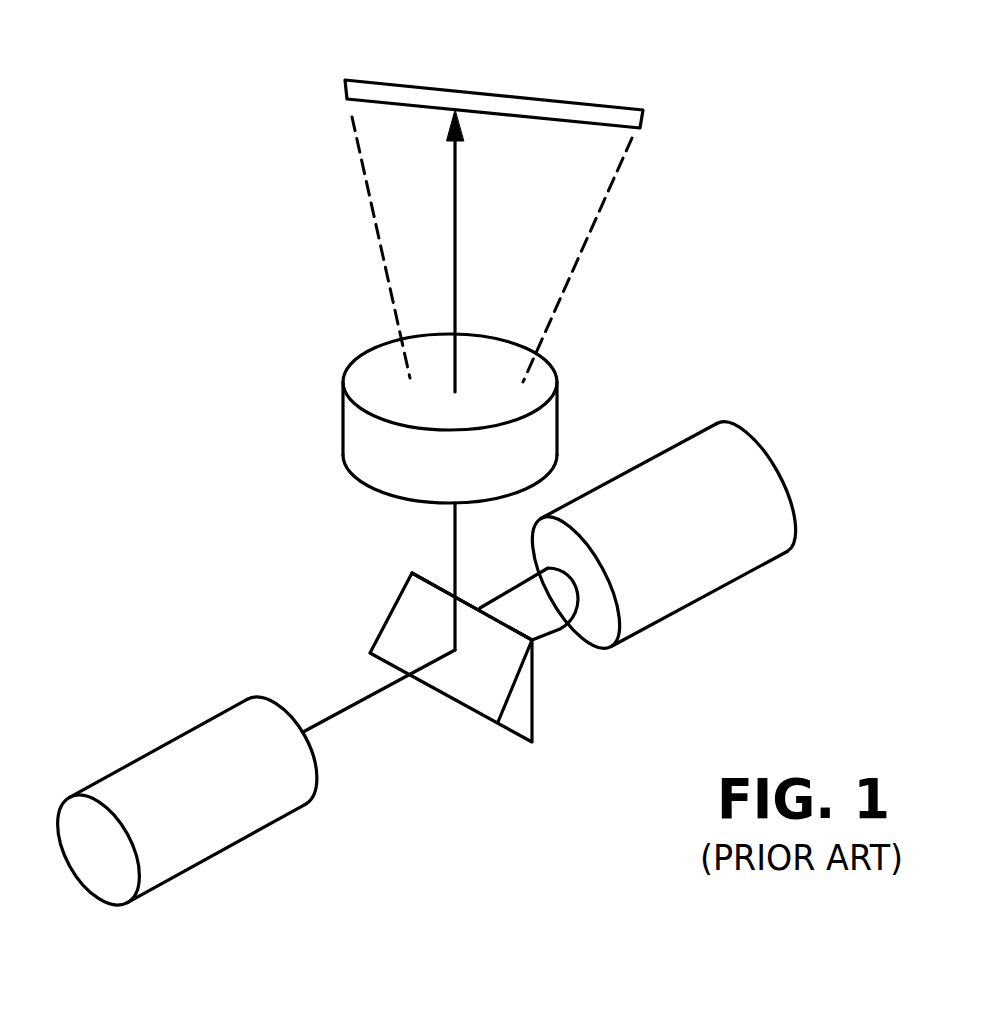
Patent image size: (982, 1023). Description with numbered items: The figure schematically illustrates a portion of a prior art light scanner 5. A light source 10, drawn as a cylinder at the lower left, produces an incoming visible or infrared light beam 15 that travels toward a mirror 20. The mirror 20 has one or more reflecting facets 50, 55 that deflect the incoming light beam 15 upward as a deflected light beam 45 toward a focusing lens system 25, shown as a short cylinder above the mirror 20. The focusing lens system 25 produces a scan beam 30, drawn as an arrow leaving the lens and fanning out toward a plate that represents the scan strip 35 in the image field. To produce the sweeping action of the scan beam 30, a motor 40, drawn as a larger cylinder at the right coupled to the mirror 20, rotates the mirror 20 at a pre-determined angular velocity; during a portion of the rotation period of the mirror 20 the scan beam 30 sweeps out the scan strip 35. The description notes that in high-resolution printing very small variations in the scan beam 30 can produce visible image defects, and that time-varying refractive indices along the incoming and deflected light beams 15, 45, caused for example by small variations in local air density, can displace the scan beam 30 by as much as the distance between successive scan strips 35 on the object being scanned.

The light scanner 5 is at (137, 445).
The light source 10 is at (145, 755).
The incoming light beam 15 is at (340, 712).
The mirror 20 is at (387, 622).
The focusing lens system 25 is at (358, 435).
The scan beam 30 is at (455, 217).
The scan strip 35 is at (522, 108).
The motor 40 is at (692, 578).
The deflected light beam 45 is at (455, 547).
The reflecting facet 50 is at (473, 678).
The reflecting facet 55 is at (510, 737).